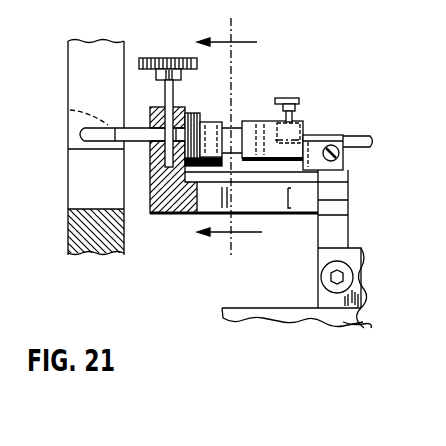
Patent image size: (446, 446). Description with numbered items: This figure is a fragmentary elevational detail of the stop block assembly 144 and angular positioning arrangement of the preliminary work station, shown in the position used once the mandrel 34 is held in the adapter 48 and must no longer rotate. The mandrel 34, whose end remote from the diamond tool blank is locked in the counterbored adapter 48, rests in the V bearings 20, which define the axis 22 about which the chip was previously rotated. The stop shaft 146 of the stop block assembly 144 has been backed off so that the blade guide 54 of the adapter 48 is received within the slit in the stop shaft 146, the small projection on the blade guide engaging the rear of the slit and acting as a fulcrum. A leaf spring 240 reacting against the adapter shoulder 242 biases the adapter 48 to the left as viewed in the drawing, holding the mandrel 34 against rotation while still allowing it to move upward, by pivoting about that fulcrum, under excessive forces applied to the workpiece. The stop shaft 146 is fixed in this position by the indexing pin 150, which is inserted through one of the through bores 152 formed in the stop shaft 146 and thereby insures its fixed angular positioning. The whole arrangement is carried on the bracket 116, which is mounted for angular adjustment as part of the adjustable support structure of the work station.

The bracket 116 is at (68, 76).
The through bores 152 is at (68, 112).
The indexing pin 150 is at (154, 58).
The stop shaft 146 is at (135, 128).
The axis 22 is at (229, 136).
The stop block assembly 144 is at (243, 83).
The blade guide 54 is at (237, 128).
The adapter shoulder 242 is at (303, 122).
The leaf spring 240 is at (313, 143).
The mandrel 34 is at (374, 137).
The V bearings 20 is at (346, 172).
The adapter 48 is at (280, 163).